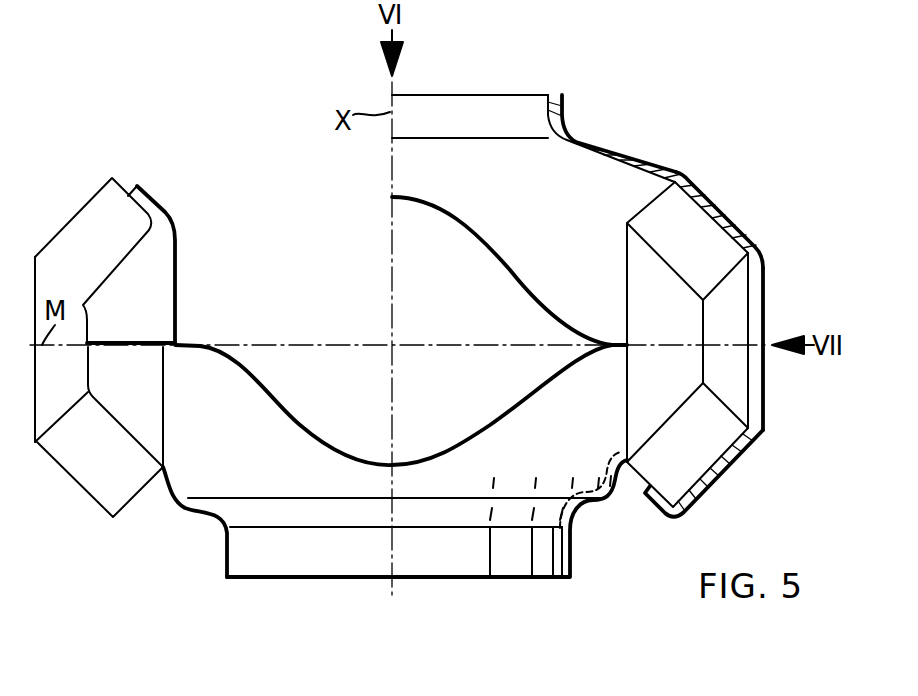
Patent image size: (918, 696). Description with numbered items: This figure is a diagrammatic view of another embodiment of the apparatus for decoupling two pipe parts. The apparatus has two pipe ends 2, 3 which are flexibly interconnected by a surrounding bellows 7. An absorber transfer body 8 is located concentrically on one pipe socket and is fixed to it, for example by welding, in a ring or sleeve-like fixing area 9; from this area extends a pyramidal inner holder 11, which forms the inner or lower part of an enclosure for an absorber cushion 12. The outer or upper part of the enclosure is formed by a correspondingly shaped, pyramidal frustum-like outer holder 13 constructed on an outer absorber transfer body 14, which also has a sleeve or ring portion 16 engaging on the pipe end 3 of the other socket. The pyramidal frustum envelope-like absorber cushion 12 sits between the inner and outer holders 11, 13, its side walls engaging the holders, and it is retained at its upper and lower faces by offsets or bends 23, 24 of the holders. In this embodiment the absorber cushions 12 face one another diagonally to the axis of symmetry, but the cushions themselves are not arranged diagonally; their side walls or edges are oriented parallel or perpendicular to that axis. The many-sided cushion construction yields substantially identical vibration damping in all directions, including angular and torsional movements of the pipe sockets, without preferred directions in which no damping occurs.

The pipe end 2 is at (543, 577).
The pipe end 3 is at (505, 95).
The bellows 7 is at (505, 290).
The absorber transfer body 8 is at (477, 478).
The fixing area 9 is at (225, 553).
The inner holder 11 is at (130, 440).
The absorber cushion 12 is at (78, 445).
The outer holder 13 is at (713, 203).
The outer absorber transfer body 14 is at (767, 291).
The sleeve or ring portion 16 is at (562, 100).
The offset or bend 23 is at (148, 198).
The offset or bend 24 is at (652, 500).